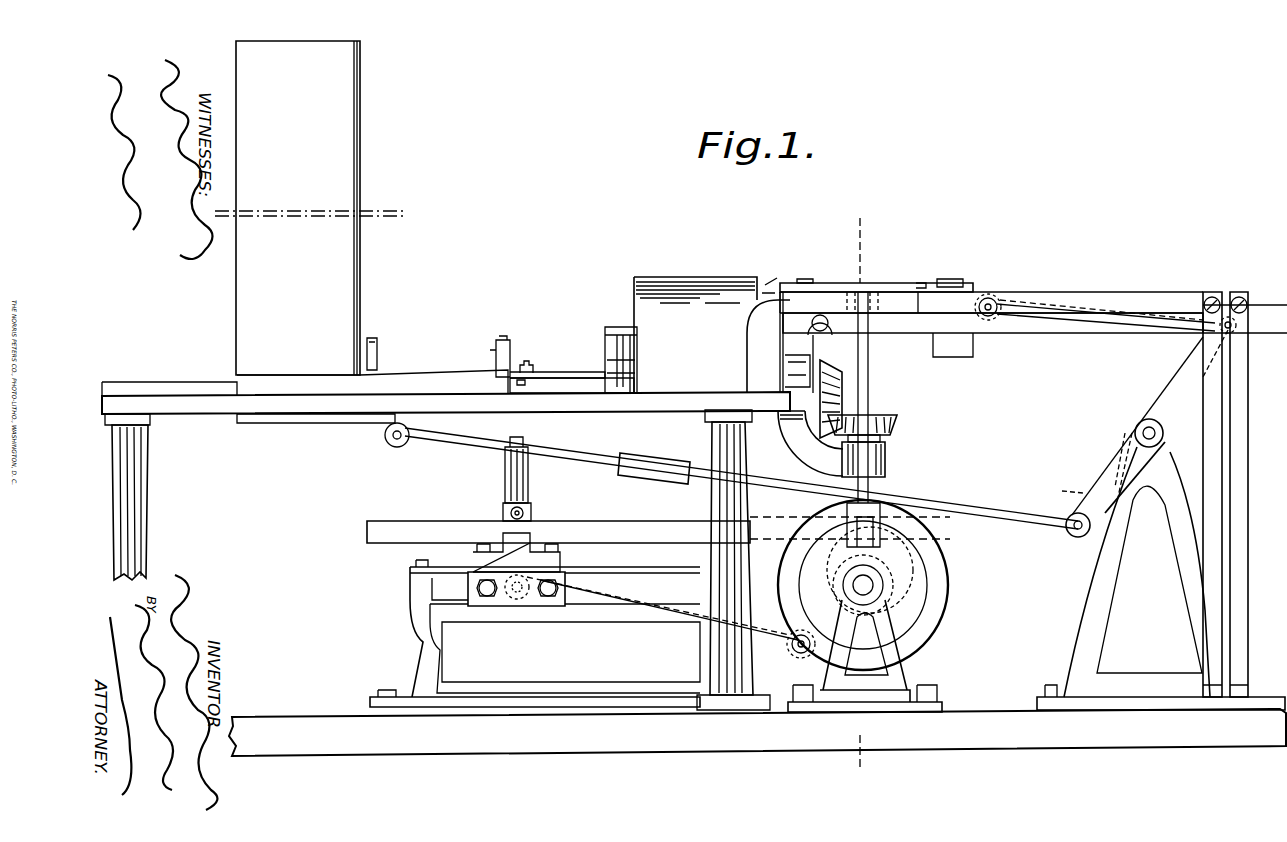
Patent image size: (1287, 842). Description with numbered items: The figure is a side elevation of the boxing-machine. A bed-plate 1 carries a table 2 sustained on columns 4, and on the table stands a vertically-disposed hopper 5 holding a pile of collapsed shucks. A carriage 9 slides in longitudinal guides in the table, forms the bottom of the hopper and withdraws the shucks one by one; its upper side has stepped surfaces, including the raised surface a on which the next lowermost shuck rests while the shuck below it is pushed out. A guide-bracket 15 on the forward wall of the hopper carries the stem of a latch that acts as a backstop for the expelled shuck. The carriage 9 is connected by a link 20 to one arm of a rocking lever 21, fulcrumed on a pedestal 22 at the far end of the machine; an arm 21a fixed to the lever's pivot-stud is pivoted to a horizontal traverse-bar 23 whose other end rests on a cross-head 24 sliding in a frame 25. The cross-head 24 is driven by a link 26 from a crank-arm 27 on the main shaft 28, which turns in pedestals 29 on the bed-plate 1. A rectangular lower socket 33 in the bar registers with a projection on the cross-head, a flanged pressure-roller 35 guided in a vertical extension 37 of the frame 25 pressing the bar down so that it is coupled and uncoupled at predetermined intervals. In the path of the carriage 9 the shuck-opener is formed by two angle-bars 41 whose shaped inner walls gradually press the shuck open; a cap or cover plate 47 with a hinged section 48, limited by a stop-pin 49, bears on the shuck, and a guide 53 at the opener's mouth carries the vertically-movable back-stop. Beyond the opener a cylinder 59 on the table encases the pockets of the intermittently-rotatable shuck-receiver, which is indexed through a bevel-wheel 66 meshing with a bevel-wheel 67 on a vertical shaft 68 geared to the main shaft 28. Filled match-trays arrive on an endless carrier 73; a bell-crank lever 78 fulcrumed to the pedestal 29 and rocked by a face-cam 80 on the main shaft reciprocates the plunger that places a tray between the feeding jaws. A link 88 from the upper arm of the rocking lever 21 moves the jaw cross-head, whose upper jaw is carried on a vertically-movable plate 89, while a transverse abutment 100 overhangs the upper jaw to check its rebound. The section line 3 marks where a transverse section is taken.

The bed-plate 1 is at (979, 750).
The table 2 is at (210, 413).
The section line 3 3 is at (858, 496).
The columns 4 is at (150, 507).
The hopper 5 is at (363, 158).
The carriage 9 is at (195, 395).
The guide-bracket 15 is at (378, 356).
The link 20 is at (571, 454).
The rocking lever 21 is at (1118, 459).
The arm 21a is at (1055, 489).
The pedestal 22 is at (1100, 591).
The traverse-bar 23 is at (380, 520).
The cross-head 24 is at (498, 608).
The frame 25 is at (408, 599).
The link 26 is at (675, 636).
The crank-arm 27 is at (798, 652).
The main shaft 28 is at (872, 586).
The pedestals 29 is at (905, 675).
The lower socket 33 is at (516, 552).
The pressure-roller 35 is at (531, 513).
The vertical extension 37 is at (503, 487).
The angle-bars 41 is at (553, 394).
The cap or cover plate 47 is at (555, 387).
The hinged section 48 is at (585, 363).
The stop-pin 49 is at (530, 362).
The guide 53 is at (496, 350).
The cylinder 59 is at (678, 280).
The bevel-wheel 66 is at (843, 378).
The bevel-wheel 67 is at (900, 428).
The vertical shaft 68 is at (887, 480).
The endless carrier 73 is at (1048, 334).
The bell-crank lever 78 is at (869, 397).
The face-cam 80 is at (945, 615).
The link 88 is at (1115, 323).
The vertically-movable plate 89 is at (942, 283).
The transverse abutment 100 is at (798, 280).
The surface a is at (151, 383).